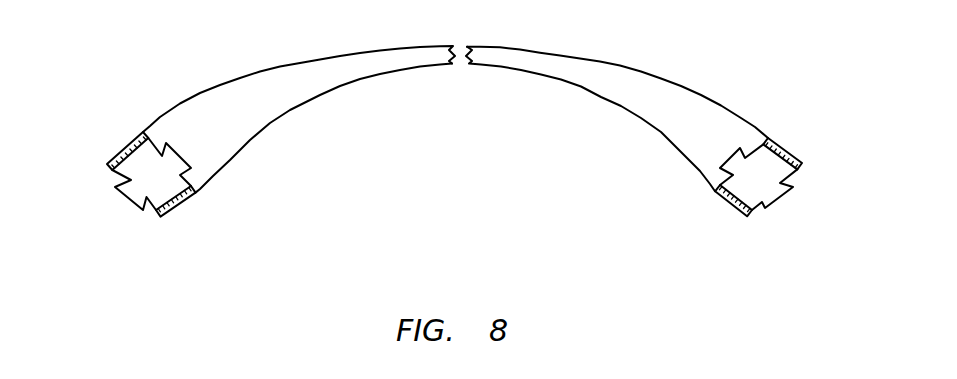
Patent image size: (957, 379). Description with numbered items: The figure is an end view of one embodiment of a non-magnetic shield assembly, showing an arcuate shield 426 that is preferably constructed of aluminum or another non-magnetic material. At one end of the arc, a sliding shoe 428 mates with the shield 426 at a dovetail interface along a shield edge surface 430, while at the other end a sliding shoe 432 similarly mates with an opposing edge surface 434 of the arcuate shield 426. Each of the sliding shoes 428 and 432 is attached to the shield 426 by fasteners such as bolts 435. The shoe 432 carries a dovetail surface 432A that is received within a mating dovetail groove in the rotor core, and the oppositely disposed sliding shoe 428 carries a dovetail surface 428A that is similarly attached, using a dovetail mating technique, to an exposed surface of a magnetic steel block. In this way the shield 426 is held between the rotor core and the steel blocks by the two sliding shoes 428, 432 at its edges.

The arcuate shield 426 is at (700, 85).
The sliding shoes 428 is at (713, 197).
The dovetail surface 428A is at (786, 200).
The shield edge surface 430 is at (712, 170).
The sliding shoes 432 is at (192, 199).
The dovetail surface 432A is at (130, 198).
The opposing edge surface 434 is at (188, 174).
The bolts 435 is at (114, 172).